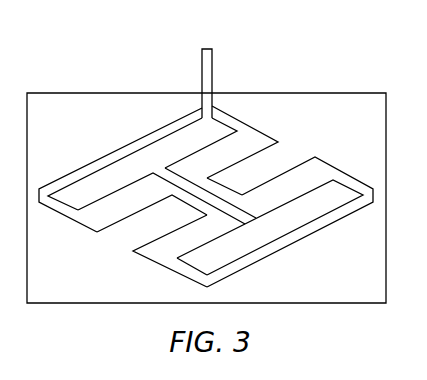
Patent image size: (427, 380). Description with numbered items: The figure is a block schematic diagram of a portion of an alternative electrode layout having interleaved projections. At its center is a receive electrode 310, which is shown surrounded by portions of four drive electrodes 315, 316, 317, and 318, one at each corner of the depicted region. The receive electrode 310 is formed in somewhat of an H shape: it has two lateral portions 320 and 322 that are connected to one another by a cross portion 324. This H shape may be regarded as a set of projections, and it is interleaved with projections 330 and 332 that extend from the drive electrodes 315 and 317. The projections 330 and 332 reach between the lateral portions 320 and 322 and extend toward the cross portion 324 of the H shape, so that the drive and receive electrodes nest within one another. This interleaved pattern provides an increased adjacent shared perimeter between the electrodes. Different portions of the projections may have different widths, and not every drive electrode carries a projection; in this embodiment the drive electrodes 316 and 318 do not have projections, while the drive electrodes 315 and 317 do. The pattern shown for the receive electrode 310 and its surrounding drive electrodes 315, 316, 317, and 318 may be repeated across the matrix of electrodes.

The receive electrode 310 is at (213, 62).
The drive electrode 315 is at (357, 110).
The drive electrode 316 is at (356, 300).
The drive electrode 317 is at (58, 300).
The drive electrode 318 is at (57, 110).
The lateral portion 320 is at (133, 158).
The lateral portion 322 is at (275, 233).
The cross portion 324 is at (212, 195).
The projection 330 is at (143, 240).
The projection 332 is at (272, 153).